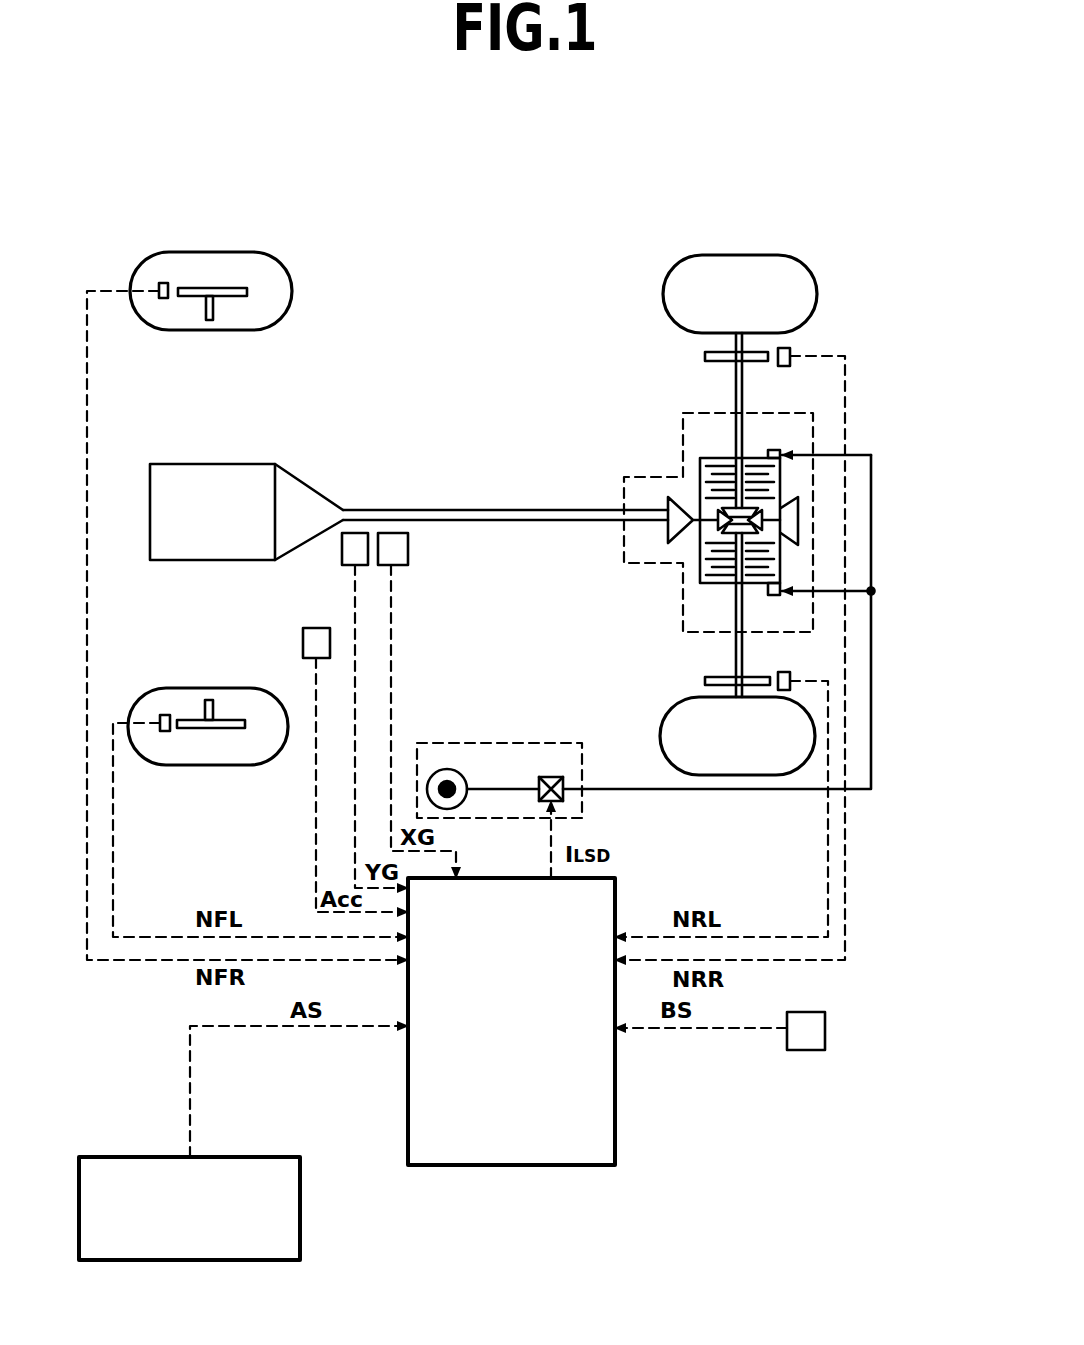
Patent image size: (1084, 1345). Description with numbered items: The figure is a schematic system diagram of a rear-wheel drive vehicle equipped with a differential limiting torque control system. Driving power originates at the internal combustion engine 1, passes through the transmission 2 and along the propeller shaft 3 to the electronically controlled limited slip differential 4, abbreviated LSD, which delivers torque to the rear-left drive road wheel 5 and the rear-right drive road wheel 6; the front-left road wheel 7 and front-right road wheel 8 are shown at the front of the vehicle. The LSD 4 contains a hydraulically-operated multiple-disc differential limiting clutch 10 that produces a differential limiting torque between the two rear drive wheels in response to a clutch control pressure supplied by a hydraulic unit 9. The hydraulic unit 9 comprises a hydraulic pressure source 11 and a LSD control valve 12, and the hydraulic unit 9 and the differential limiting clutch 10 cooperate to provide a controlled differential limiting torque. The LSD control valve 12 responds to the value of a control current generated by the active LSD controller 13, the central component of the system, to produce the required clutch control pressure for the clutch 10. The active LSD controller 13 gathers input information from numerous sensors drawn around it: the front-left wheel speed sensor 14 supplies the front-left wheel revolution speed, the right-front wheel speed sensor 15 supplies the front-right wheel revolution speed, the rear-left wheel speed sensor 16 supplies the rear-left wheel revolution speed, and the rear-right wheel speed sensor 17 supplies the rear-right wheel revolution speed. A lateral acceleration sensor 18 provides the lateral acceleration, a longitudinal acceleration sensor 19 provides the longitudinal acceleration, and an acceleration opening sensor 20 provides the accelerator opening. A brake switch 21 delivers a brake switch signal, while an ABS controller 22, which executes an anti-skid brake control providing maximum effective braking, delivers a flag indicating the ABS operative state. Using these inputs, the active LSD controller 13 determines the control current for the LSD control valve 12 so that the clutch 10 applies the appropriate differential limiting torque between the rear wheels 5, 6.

The internal combustion engine 1 is at (225, 548).
The transmission 2 is at (323, 525).
The propeller shaft 3 is at (550, 508).
The electronically controlled limited slip differential 4 is at (779, 514).
The rear-left drive road wheel 5 is at (660, 735).
The rear-right drive road wheel 6 is at (763, 255).
The front-left road wheel 7 is at (230, 765).
The front-right road wheel 8 is at (262, 258).
The hydraulic unit 9 is at (644, 666).
The differential limiting clutch 10 is at (782, 491).
The hydraulic pressure source 11 is at (465, 805).
The LSD control valve 12 is at (555, 777).
The active LSD controller 13 is at (617, 1128).
The front-left wheel speed sensor 14 is at (165, 715).
The right-front wheel speed sensor 15 is at (162, 305).
The rear-left wheel speed sensor 16 is at (787, 672).
The rear-right wheel speed sensor 17 is at (787, 366).
The lateral acceleration sensor 18 is at (350, 566).
The longitudinal acceleration sensor 19 is at (395, 566).
The acceleration opening sensor 20 is at (303, 645).
The brake switch 21 is at (826, 1033).
The ABS controller 22 is at (300, 1213).